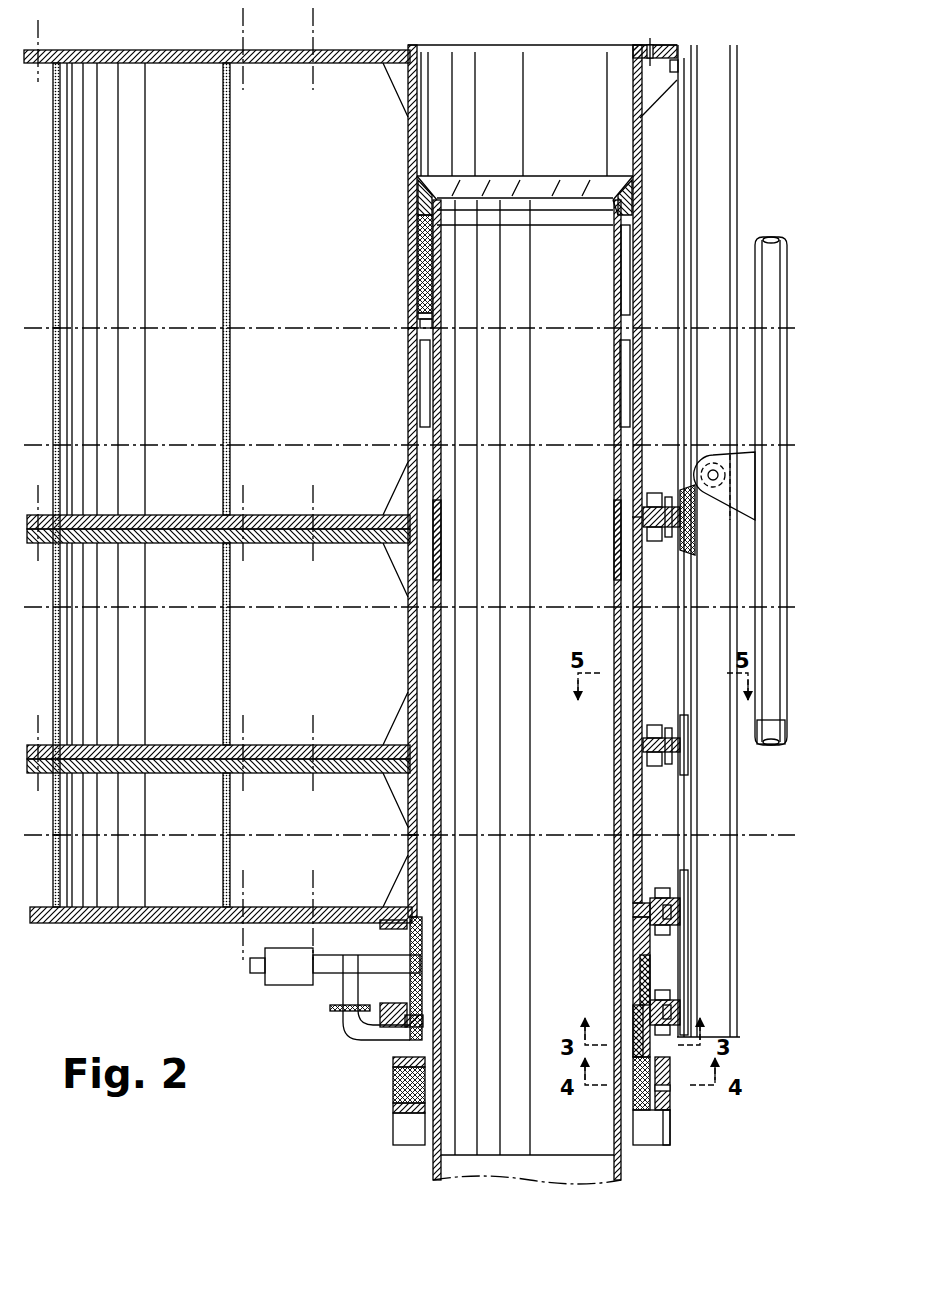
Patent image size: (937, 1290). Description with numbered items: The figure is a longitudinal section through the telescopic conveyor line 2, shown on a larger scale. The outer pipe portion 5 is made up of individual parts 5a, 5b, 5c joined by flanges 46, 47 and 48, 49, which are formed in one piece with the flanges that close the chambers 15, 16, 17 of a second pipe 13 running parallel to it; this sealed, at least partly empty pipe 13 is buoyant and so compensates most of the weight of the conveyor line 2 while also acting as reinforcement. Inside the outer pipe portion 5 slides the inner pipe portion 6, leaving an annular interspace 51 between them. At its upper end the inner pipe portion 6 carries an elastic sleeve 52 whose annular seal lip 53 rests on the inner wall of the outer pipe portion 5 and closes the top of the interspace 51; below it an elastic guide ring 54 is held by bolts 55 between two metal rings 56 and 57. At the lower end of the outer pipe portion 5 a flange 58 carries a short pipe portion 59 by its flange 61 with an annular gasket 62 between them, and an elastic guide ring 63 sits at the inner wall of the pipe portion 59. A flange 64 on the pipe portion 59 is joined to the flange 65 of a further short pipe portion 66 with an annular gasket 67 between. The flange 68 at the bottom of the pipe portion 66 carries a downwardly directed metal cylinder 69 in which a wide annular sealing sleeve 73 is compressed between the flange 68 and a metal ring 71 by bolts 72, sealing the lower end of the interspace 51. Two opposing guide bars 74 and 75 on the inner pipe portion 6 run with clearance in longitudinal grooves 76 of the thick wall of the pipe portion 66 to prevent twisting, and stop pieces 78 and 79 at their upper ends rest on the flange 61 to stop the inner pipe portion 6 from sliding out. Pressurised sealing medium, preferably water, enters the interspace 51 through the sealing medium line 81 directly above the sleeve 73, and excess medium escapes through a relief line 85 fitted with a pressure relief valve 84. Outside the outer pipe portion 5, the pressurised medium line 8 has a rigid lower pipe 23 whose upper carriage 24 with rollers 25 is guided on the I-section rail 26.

The conveyor line 2 is at (752, 72).
The outer pipe portion 5 is at (650, 165).
The upper part of outer pipe portion 5a is at (408, 246).
The middle part of outer pipe portion 5b is at (408, 645).
The lower part of outer pipe portion 5c is at (410, 805).
The inner pipe portion 6 is at (614, 748).
The pressurised medium line 8 is at (770, 232).
The second pipe 13 is at (118, 925).
The chamber 15 is at (53, 242).
The chamber 16 is at (53, 676).
The chamber 17 is at (53, 848).
The rigid pipe 23 is at (762, 745).
The carriage 24 is at (722, 500).
The rollers 25 is at (713, 462).
The rail 26 is at (735, 168).
The flange 46 is at (685, 500).
The flange 47 is at (662, 540).
The flange 48 is at (682, 720).
The flange 49 is at (663, 760).
The annular interspace 51 is at (420, 325).
The sleeve 52 is at (612, 200).
The annular seal lip 53 is at (625, 195).
The guide ring 54 is at (425, 275).
The bolts 55 is at (630, 256).
The metal ring 56 is at (425, 205).
The metal ring 57 is at (418, 316).
The flange 58 is at (670, 903).
The short pipe portion 59 is at (684, 960).
The flange 61 is at (670, 912).
The annular gasket 62 is at (640, 918).
The guide ring 63 is at (640, 950).
The flange 64 is at (678, 1005).
The flange 65 is at (672, 1015).
The further short pipe portion 66 is at (638, 1030).
The annular gasket 67 is at (645, 1010).
The flange 68 is at (655, 1065).
The metal cylinder 69 is at (670, 1125).
The metal ring 71 is at (400, 1108).
The bolts 72 is at (665, 1090).
The annular sealing sleeve 73 is at (393, 1080).
The guide bar 74 is at (428, 540).
The guide bar 75 is at (623, 540).
The longitudinal grooves 76 is at (425, 1022).
The stop piece 78 is at (425, 380).
The stop piece 79 is at (620, 375).
The sealing medium line 81 is at (350, 996).
The pressure relief valve 84 is at (276, 978).
The relief line 85 is at (372, 962).